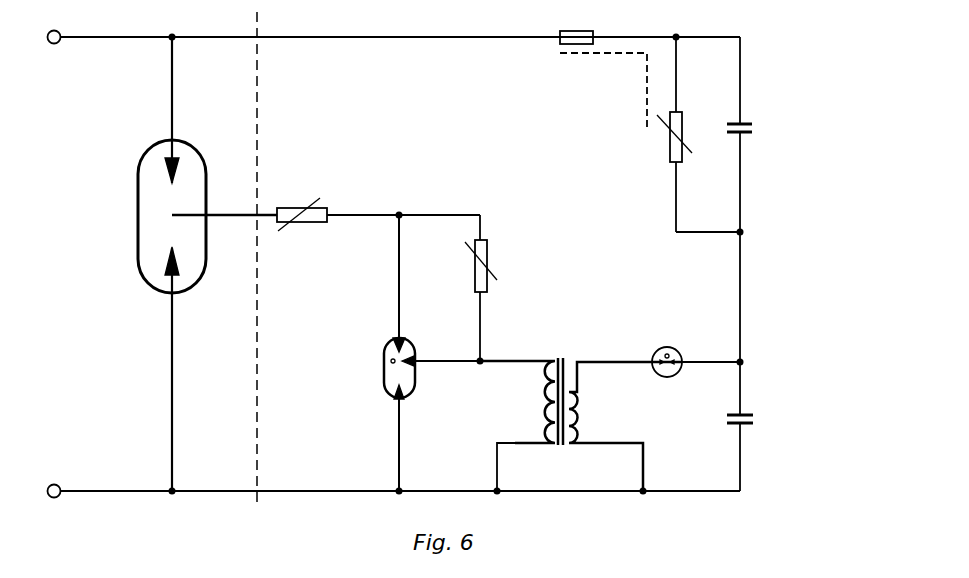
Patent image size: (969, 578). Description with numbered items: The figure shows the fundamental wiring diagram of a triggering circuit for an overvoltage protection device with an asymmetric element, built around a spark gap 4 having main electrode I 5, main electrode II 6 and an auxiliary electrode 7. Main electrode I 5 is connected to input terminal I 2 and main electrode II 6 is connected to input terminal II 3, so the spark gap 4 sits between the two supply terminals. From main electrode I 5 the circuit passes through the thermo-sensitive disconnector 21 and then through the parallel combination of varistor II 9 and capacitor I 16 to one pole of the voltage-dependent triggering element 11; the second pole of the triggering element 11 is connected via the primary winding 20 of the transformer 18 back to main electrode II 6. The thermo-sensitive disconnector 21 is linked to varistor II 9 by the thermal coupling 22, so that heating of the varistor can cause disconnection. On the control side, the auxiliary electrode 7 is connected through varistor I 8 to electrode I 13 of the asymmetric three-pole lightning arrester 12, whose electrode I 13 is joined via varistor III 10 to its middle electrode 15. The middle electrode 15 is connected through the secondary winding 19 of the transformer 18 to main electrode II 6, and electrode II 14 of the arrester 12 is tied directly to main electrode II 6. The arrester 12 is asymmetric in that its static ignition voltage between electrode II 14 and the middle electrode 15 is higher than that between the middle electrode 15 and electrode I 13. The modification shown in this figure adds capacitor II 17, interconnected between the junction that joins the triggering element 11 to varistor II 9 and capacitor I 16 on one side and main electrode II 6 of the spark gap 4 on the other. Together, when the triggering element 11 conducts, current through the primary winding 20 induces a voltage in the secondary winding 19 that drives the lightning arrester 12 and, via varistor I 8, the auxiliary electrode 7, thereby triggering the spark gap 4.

The input terminal I 2 is at (48, 46).
The input terminal II 3 is at (48, 498).
The spark gap 4 is at (138, 222).
The main electrode I 5 is at (168, 130).
The main electrode II 6 is at (170, 302).
The auxiliary electrode 7 is at (212, 212).
The varistor I 8 is at (288, 209).
The varistor II 9 is at (683, 122).
The varistor III 10 is at (487, 255).
The voltage-dependent triggering element 11 is at (665, 348).
The asymmetric three-pole lightning arrester 12 is at (383, 365).
The electrode I 13 is at (397, 333).
The electrode II 14 is at (402, 403).
The middle electrode 15 is at (423, 358).
The capacitor I 16 is at (743, 135).
The capacitor II 17 is at (745, 408).
The transformer 18 is at (569, 370).
The secondary winding 19 is at (543, 385).
The primary winding 20 is at (582, 405).
The thermo-sensitive disconnector 21 is at (557, 42).
The thermal coupling 22 is at (647, 83).